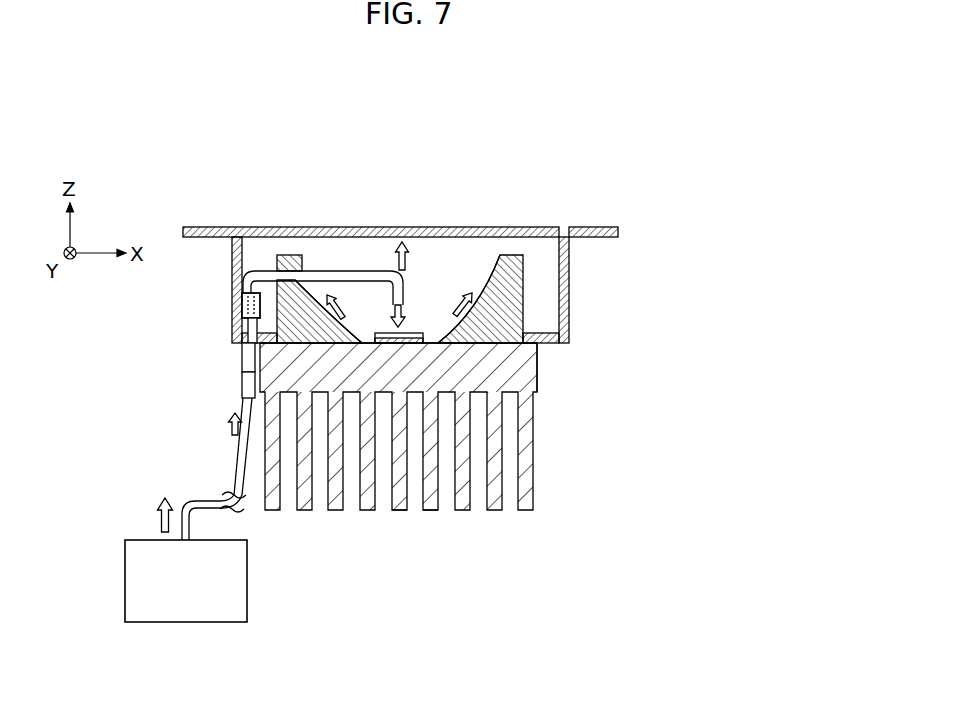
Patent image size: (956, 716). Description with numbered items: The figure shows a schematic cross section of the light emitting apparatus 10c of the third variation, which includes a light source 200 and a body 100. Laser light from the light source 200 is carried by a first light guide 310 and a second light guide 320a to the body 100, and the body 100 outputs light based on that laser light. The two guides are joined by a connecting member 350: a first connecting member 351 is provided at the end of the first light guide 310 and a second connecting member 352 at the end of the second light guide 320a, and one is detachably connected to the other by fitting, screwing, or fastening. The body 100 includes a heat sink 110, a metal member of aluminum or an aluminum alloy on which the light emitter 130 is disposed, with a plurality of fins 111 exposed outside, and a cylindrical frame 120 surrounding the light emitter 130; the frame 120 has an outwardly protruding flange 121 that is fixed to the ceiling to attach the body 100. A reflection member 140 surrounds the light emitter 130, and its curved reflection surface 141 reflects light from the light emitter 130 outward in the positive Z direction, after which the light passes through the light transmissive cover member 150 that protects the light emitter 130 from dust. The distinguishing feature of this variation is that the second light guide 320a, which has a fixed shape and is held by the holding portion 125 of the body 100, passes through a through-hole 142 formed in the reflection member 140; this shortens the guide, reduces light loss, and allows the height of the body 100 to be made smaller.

The light emitting apparatus 10c is at (656, 189).
The body 100 is at (555, 472).
The heat sink 110 is at (537, 372).
The fins 111 is at (428, 511).
The frame 120 is at (569, 290).
The flange 121 is at (594, 237).
The holding portion 125 is at (260, 303).
The light emitter 130 is at (412, 318).
The reflection member 140 is at (525, 315).
The reflection surface 141 is at (490, 283).
The through-hole 142 is at (272, 282).
The cover member 150 is at (495, 227).
The light source 200 is at (247, 578).
The first light guide 310 is at (239, 474).
The second light guide 320a is at (362, 271).
The connecting member 350 is at (185, 372).
The first connecting member 351 is at (242, 388).
The second connecting member 352 is at (242, 358).